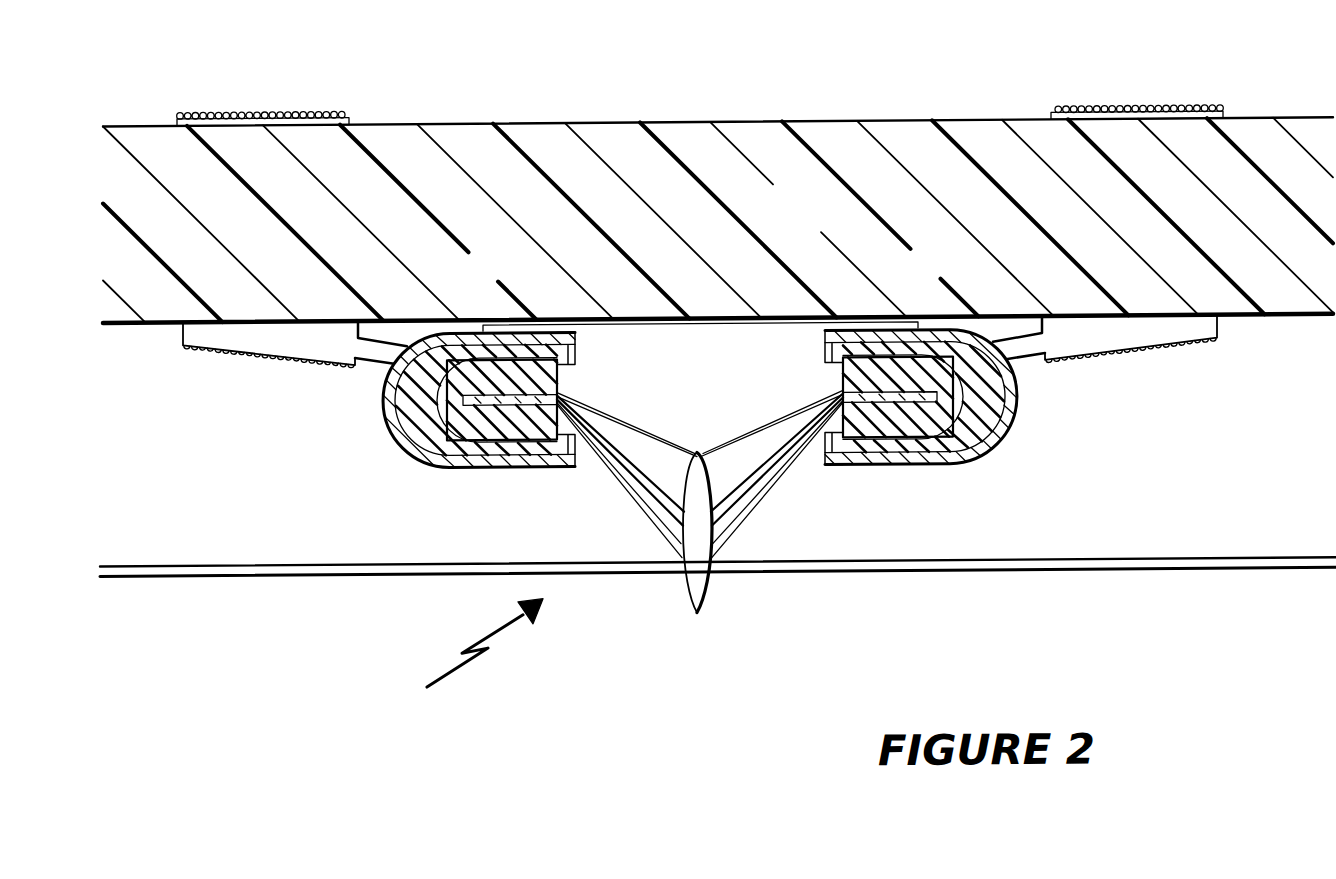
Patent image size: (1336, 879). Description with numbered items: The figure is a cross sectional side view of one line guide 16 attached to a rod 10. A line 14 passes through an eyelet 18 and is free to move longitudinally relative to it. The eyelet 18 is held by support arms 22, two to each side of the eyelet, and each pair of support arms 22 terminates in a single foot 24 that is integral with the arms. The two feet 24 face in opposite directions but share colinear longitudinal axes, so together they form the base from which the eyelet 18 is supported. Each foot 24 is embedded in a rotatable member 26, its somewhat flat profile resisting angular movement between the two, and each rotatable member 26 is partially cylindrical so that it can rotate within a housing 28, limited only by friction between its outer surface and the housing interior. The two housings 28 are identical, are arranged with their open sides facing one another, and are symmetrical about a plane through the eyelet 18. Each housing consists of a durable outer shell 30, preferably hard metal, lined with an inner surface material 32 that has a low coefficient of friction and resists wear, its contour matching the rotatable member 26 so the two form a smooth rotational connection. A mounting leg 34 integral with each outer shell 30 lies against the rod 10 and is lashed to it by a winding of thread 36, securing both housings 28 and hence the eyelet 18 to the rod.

The rod 10 is at (820, 234).
The line 14 is at (1157, 577).
The line guide 16 is at (460, 666).
The eyelet 18 is at (697, 582).
The support arms 22 is at (622, 462).
The foot 24 is at (503, 406).
The rotatable member 26 is at (517, 433).
The housing 28 is at (457, 470).
The outer shell 30 is at (412, 457).
The inner surface material 32 is at (405, 410).
The mounting leg 34 is at (250, 357).
The thread 36 is at (153, 367).